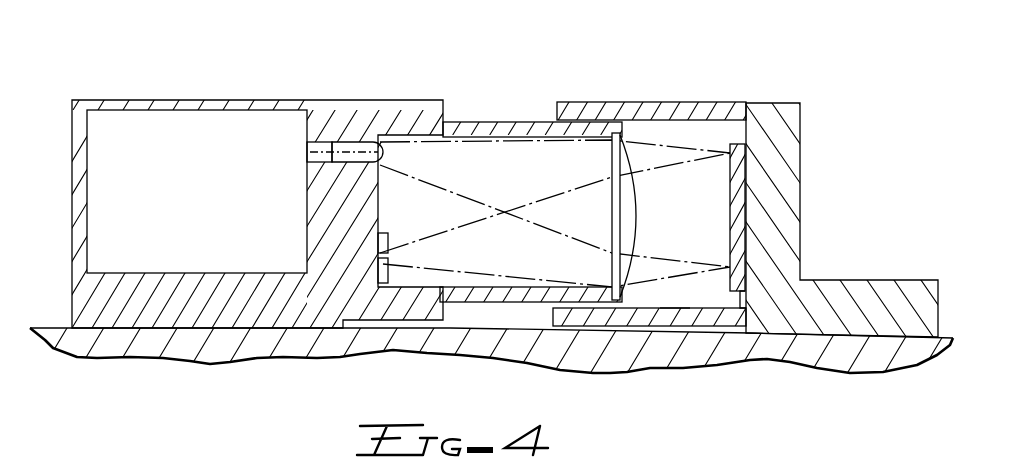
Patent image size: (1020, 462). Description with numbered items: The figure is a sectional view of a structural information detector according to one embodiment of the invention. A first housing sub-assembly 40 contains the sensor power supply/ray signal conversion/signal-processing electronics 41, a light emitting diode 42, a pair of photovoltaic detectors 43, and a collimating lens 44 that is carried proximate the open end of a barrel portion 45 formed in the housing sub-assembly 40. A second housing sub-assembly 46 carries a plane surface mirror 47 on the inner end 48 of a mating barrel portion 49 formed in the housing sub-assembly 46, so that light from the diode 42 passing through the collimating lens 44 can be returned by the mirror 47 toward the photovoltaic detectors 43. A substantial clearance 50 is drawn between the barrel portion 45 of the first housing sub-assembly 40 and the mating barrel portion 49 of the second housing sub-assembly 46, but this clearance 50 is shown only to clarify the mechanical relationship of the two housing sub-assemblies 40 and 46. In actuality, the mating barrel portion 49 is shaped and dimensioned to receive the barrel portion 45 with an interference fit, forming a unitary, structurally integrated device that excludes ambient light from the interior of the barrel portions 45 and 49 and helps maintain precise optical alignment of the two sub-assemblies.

The first housing sub-assembly 40 is at (222, 337).
The sensor power supply/ray signal conversion/signal-processing electronics 41 is at (197, 211).
The light emitting diode 42 is at (357, 147).
The pair of photovoltaic detectors 43 is at (375, 267).
The collimating lens 44 is at (631, 222).
The barrel portion 45 is at (487, 122).
The second housing sub-assembly 46 is at (811, 237).
The plane surface mirror 47 is at (736, 221).
The inner end 48 is at (741, 304).
The mating barrel portion 49 is at (673, 315).
The clearance 50 is at (596, 102).